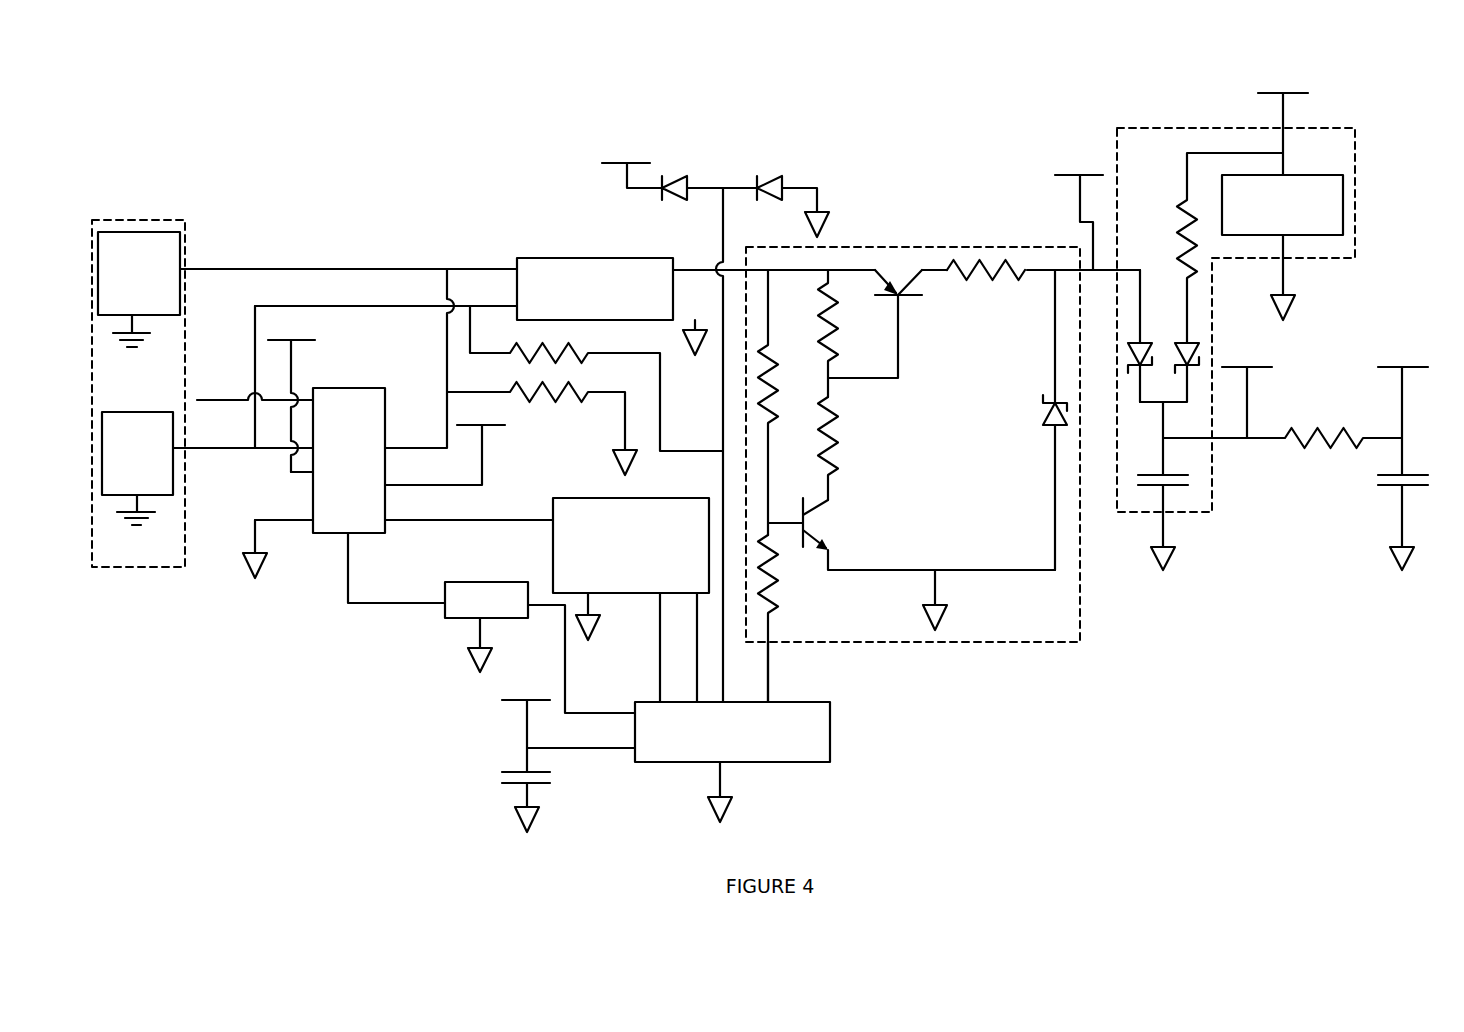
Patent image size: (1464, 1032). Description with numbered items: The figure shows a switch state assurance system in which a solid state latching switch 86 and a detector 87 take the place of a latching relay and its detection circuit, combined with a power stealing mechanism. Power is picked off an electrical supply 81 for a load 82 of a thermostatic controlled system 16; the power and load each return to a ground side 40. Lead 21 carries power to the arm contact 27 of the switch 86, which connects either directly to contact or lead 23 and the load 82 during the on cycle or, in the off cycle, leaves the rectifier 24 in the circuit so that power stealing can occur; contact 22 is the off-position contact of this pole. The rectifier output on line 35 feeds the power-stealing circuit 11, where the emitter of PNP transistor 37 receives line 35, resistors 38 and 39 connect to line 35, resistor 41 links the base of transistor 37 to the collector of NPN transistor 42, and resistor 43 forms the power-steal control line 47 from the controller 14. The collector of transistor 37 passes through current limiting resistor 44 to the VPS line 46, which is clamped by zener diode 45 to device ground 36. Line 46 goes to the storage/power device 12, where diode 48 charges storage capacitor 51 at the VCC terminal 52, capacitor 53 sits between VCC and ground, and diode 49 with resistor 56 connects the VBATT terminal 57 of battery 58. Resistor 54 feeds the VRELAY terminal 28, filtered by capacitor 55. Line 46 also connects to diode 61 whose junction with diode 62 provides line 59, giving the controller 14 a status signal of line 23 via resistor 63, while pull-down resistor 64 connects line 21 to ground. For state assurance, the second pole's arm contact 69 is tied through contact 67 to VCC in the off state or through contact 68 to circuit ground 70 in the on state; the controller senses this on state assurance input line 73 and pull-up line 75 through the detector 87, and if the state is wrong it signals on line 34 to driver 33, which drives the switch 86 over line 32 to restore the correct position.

The power-stealing circuit 11 is at (858, 246).
The storage/power device 12 is at (1190, 127).
The controller 14 is at (831, 728).
The controlled system 16 is at (186, 222).
The lead 21 is at (290, 268).
The contact 22 is at (233, 399).
The contact or lead 23 is at (245, 447).
The rectifier 24 is at (636, 266).
The arm contact 27 is at (408, 446).
The VRELAY terminal 28 is at (485, 437).
The line 32 is at (377, 604).
The driver 33 is at (462, 582).
The line 34 is at (564, 680).
The line 35 is at (710, 269).
The device ground 36 is at (804, 214).
The PNP transistor 37 is at (902, 300).
The resistor 38 is at (775, 360).
The resistor 39 is at (832, 358).
The ground side 40 is at (112, 338).
The resistor 41 is at (840, 457).
The NPN transistor 42 is at (808, 520).
The resistor 43 is at (773, 590).
The resistor 44 is at (980, 280).
The zener diode 45 is at (1045, 420).
The VPS line 46 is at (625, 170).
The power-steal control line 47 is at (770, 679).
The diode 48 is at (1146, 330).
The diode 49 is at (1182, 346).
The storage capacitor 51 is at (1158, 473).
The VCC terminal 52 is at (307, 340).
The capacitor 53 is at (525, 767).
The resistor 54 is at (1296, 446).
The capacitor 55 is at (1393, 474).
The resistor 56 is at (1178, 224).
The VBATT terminal 57 is at (1285, 118).
The battery 58 is at (1294, 185).
The line 59 is at (722, 486).
The diode 61 is at (687, 200).
The diode 62 is at (770, 186).
The resistor 63 is at (567, 335).
The pull-down resistor 64 is at (515, 380).
The contact 67 is at (298, 473).
The contact 68 is at (305, 518).
The arm contact 69 is at (406, 523).
The circuit ground 70 is at (243, 560).
The state assurance input line 73 is at (659, 647).
The state assurance pull-up line 75 is at (695, 665).
The power 81 is at (181, 242).
The load 82 is at (155, 413).
The latching switch 86 is at (342, 538).
The detector 87 is at (552, 545).